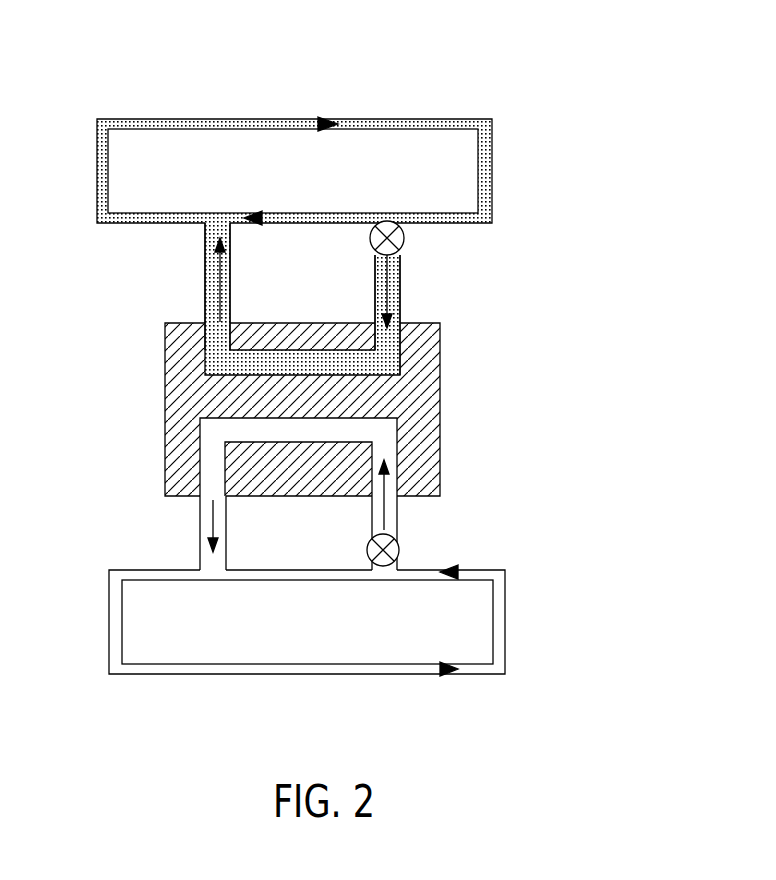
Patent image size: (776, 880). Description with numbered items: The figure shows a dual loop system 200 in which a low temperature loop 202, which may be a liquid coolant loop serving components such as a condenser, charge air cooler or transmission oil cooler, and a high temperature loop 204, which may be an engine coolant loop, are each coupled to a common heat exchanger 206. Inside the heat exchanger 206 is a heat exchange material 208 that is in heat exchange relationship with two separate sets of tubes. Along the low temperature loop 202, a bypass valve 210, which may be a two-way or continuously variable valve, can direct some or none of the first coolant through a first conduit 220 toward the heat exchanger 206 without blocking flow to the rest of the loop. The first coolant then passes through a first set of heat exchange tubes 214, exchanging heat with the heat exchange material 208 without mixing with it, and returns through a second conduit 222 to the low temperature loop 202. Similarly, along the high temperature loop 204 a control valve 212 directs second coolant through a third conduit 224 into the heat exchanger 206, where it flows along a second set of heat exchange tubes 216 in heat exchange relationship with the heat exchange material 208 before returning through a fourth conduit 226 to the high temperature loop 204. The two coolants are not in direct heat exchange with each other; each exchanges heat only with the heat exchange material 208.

The dual loop system 200 is at (680, 93).
The low temperature loop 202 is at (478, 120).
The high temperature loop 204 is at (483, 570).
The heat exchanger 206 is at (438, 323).
The heat exchange material 208 is at (299, 410).
The bypass valve 210 is at (389, 224).
The control valve 212 is at (400, 557).
The first set of heat exchange tubes 214 is at (320, 373).
The second set of heat exchange tubes 216 is at (317, 440).
The first conduit 220 is at (400, 263).
The second conduit 222 is at (232, 260).
The third conduit 224 is at (373, 530).
The fourth conduit 226 is at (200, 553).